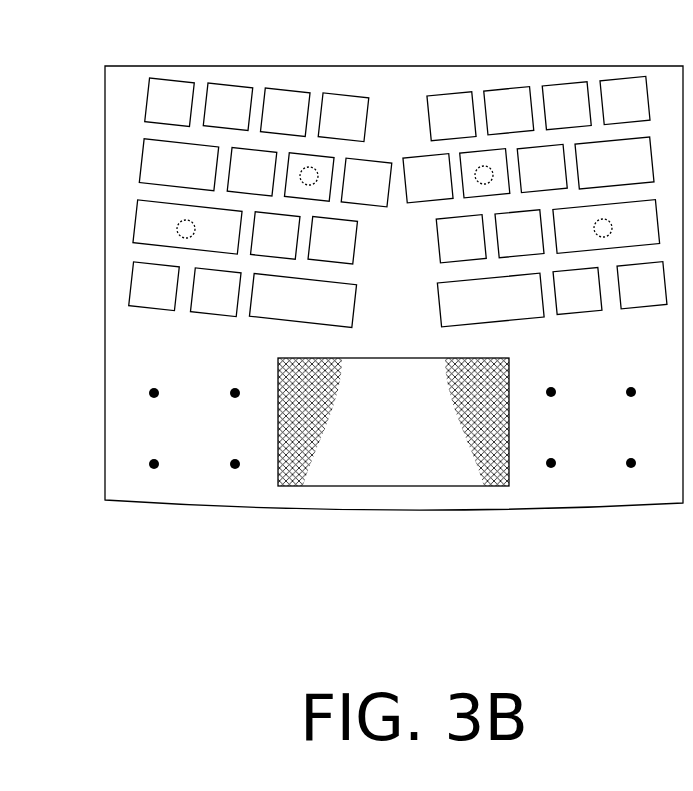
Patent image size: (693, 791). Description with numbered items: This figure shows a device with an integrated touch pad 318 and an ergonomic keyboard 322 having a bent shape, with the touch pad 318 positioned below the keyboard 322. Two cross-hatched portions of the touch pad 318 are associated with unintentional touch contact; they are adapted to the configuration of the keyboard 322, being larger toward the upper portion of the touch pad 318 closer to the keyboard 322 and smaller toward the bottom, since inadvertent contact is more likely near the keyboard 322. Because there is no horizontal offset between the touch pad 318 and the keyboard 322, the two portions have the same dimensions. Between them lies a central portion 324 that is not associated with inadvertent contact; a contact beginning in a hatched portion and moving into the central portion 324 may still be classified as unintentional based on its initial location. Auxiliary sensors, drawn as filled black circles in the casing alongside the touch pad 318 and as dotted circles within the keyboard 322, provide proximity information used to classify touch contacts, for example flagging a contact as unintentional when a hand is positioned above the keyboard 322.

The ergonomic keyboard 322 is at (470, 66).
The touch pad 318 is at (345, 358).
The central portion 324 is at (408, 484).